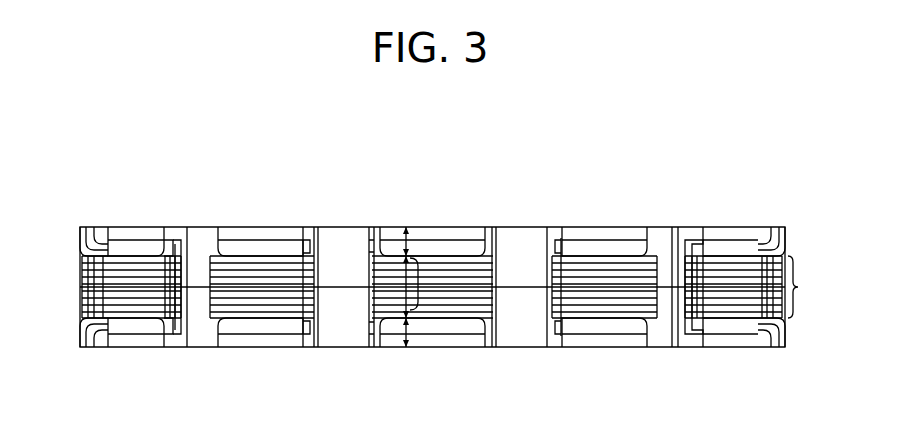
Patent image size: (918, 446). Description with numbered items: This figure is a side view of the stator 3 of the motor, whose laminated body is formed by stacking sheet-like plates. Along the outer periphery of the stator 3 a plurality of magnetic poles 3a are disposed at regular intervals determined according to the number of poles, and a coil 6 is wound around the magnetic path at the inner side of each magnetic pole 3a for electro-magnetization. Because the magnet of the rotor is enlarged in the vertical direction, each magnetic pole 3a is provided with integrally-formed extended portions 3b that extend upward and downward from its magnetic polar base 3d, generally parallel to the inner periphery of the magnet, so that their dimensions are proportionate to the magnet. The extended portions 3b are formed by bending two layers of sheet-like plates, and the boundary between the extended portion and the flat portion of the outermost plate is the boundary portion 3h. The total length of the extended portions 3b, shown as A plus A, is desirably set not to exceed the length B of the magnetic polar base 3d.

The stator 3 is at (203, 238).
The magnetic poles 3a is at (463, 270).
The extended portions 3b is at (443, 233).
The magnetic polar base 3d is at (420, 290).
The boundary portion 3h is at (227, 250).
The coil 6 is at (373, 232).
The length of extended portion A is at (405, 226).
The length of magnetic polar base B is at (407, 280).